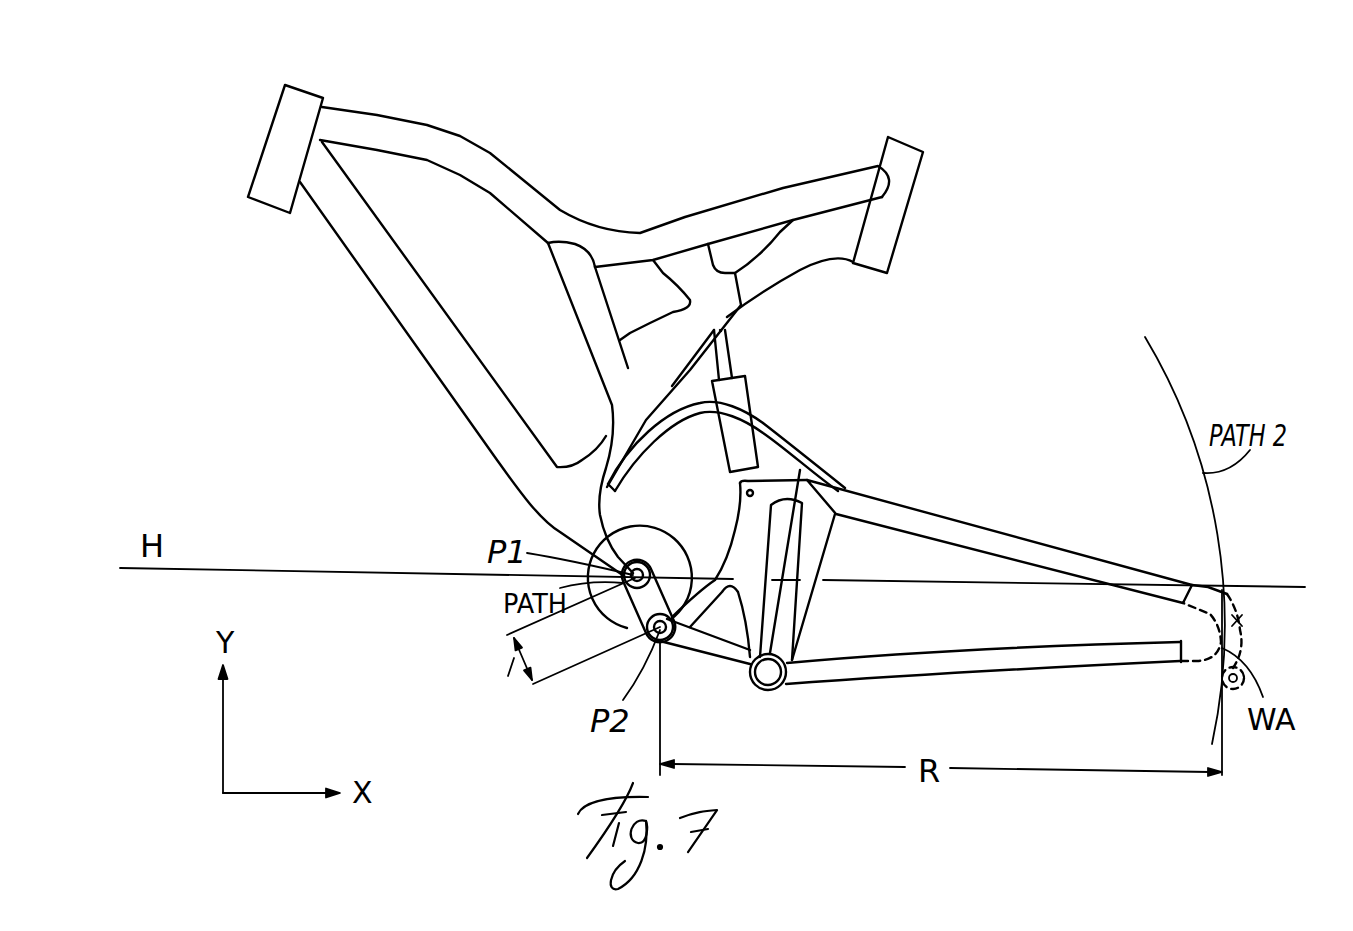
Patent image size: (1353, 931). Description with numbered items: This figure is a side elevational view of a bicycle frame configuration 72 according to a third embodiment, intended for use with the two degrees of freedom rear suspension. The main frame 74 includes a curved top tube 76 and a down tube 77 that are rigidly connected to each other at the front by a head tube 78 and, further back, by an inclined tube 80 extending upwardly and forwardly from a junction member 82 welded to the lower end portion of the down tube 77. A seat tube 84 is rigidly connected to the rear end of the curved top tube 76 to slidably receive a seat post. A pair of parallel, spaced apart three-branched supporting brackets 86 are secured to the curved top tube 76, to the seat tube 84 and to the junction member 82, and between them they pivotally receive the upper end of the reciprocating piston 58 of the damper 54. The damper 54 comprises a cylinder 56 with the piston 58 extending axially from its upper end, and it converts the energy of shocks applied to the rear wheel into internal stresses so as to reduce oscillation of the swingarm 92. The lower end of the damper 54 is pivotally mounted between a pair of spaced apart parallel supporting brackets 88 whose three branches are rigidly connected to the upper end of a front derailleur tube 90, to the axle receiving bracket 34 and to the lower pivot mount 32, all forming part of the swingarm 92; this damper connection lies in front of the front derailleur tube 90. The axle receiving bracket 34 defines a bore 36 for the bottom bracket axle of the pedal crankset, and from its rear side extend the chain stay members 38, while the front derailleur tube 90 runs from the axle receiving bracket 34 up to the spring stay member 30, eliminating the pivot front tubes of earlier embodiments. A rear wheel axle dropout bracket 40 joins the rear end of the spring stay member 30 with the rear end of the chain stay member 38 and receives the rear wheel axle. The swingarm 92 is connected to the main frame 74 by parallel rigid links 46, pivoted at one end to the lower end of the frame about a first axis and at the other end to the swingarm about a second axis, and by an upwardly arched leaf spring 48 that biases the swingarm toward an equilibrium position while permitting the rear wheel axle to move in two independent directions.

The spring stay member 30 is at (1010, 537).
The lower pivot mount 32 is at (713, 670).
The axle receiving bracket 34 is at (783, 693).
The bore 36 is at (768, 677).
The chain stay member 38 is at (1000, 663).
The rear wheel axle dropout bracket 40 is at (1240, 618).
The rigid link 46 is at (685, 592).
The leaf spring 48 is at (783, 440).
The damper 54 is at (752, 366).
The cylinder 56 is at (745, 397).
The reciprocating piston 58 is at (730, 340).
The bicycle frame configuration 72 is at (1068, 212).
The main frame 74 is at (596, 165).
The curved top tube 76 is at (521, 172).
The down tube 77 is at (387, 308).
The head tube 78 is at (280, 103).
The inclined tube 80 is at (570, 302).
The junction member 82 is at (593, 439).
The seat tube 84 is at (900, 217).
The three-branched supporting bracket 86 is at (783, 283).
The supporting bracket 88 is at (730, 507).
The front derailleur tube 90 is at (793, 627).
The swingarm 92 is at (951, 475).